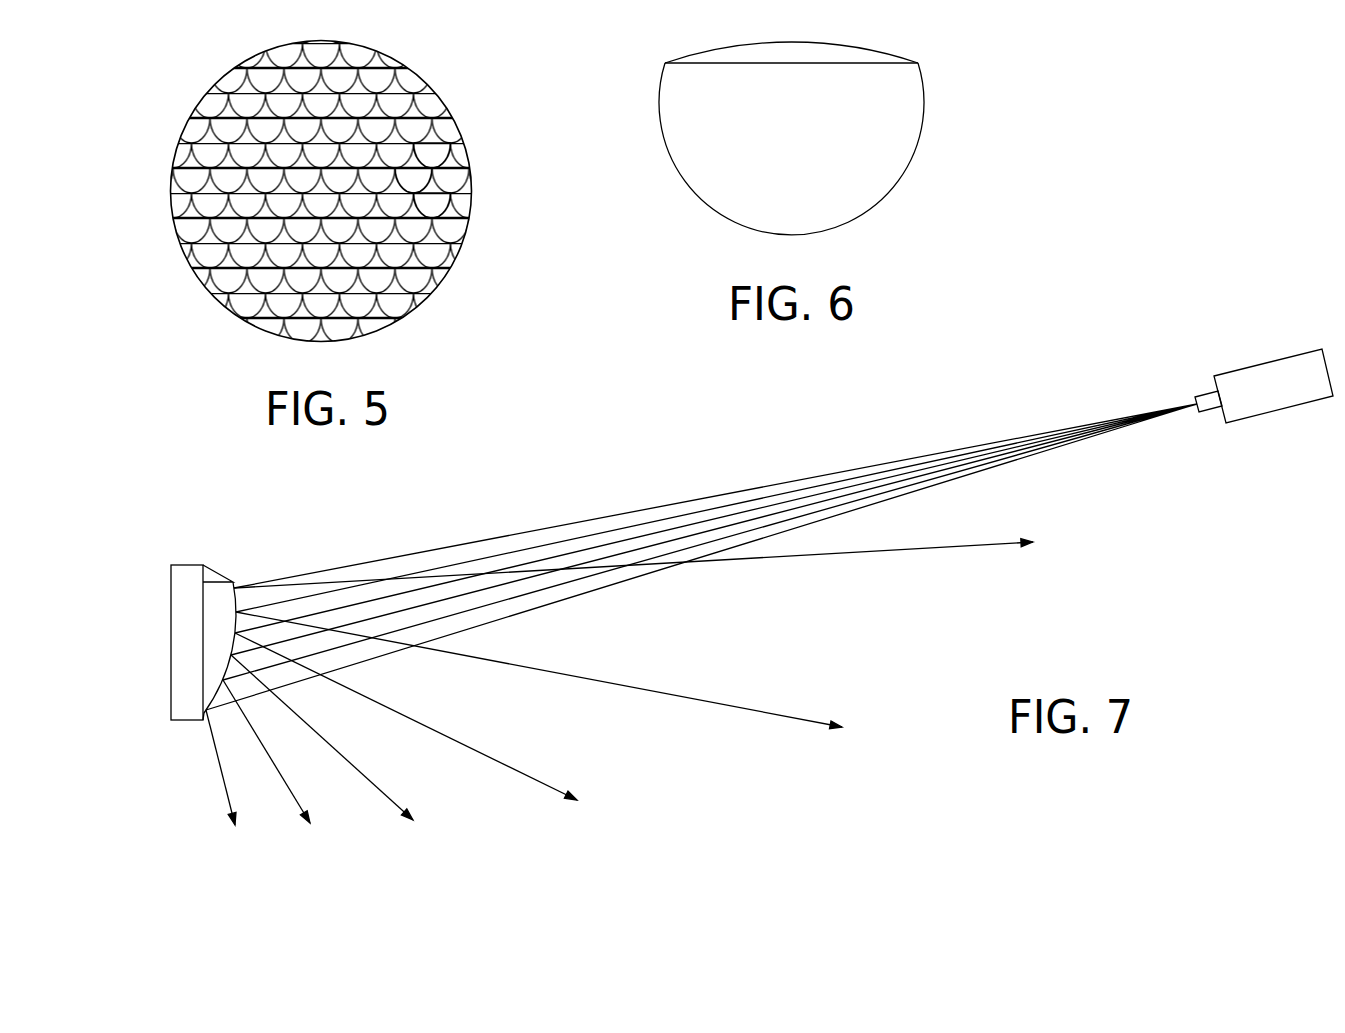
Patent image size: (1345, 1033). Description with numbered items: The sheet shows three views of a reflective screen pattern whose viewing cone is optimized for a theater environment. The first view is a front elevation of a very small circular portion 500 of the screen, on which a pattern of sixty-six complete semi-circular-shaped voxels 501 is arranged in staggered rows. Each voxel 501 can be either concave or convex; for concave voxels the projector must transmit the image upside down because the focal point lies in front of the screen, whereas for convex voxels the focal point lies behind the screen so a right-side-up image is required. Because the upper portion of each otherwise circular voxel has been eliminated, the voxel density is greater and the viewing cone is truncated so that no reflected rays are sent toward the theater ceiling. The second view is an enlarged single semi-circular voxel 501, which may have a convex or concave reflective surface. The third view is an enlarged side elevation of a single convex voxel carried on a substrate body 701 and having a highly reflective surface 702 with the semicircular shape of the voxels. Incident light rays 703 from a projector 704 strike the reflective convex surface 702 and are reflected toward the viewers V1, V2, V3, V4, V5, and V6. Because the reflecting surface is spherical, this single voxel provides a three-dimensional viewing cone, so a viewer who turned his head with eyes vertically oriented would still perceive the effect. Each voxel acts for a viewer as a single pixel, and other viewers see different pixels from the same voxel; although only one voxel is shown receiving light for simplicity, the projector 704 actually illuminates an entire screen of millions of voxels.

In FIG. 5, the portion of a screen 500 is at (222, 57).
In FIG. 5, the semi-circular-shaped voxel 501 is at (432, 202).
In FIG. 6, the semi-circular-shaped voxel 501 is at (934, 65).
In FIG. 7, the substrate 701 is at (187, 580).
In FIG. 7, the reflective surface 702 is at (245, 577).
In FIG. 7, the incident light rays 703 is at (950, 443).
In FIG. 7, the projector 704 is at (1271, 375).
In FIG. 7, the viewer V1 is at (229, 782).
In FIG. 7, the viewer V2 is at (277, 766).
In FIG. 7, the viewer V3 is at (334, 751).
In FIG. 7, the viewer V4 is at (420, 730).
In FIG. 7, the viewer V5 is at (554, 677).
In FIG. 7, the viewer V6 is at (647, 559).